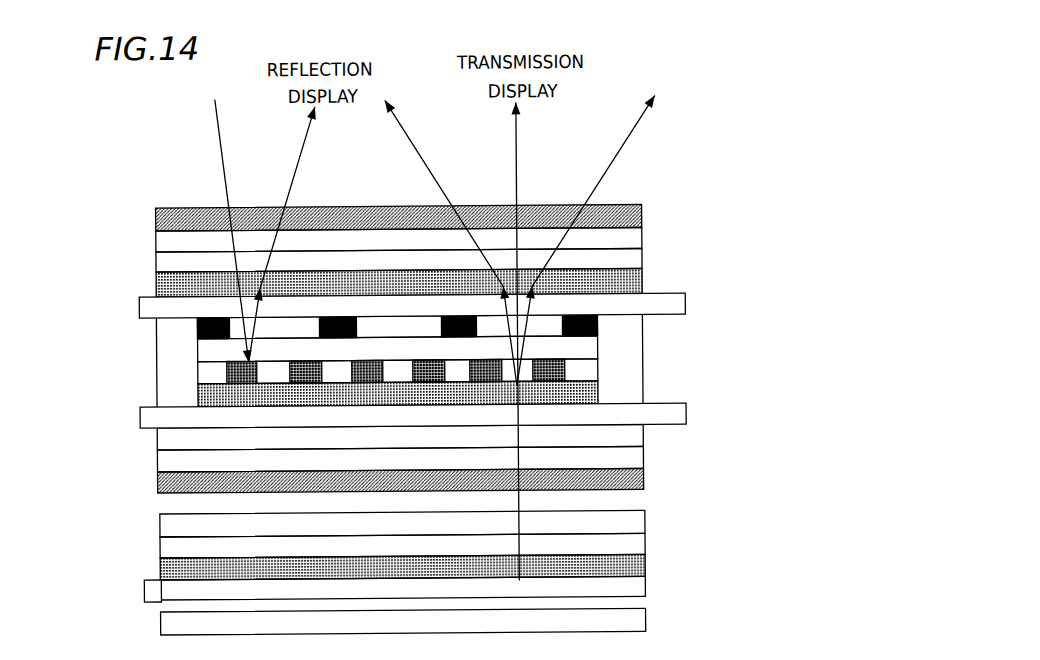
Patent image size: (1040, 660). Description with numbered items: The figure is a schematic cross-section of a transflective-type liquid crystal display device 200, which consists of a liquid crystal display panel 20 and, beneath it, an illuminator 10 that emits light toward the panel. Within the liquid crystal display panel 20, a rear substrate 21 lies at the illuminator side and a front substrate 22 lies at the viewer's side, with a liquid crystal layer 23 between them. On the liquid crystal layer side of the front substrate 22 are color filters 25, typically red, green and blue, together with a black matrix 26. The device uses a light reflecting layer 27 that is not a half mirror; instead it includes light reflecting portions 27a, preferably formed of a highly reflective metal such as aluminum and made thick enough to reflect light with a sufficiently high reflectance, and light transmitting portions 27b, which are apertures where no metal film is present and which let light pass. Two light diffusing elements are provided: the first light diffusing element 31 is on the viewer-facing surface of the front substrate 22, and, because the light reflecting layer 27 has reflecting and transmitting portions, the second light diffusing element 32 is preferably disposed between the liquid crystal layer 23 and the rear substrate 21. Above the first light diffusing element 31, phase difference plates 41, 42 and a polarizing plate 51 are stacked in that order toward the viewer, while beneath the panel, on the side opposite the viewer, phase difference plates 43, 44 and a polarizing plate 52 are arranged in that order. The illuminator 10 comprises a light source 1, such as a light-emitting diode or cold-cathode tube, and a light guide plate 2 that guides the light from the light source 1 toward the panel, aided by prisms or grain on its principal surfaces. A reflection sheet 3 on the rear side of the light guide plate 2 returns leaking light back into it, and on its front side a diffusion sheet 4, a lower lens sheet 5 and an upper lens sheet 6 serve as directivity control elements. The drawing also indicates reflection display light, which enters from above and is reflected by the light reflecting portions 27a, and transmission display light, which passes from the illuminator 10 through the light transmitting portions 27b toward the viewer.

The liquid crystal display device 200 is at (699, 145).
The liquid crystal display panel 20 is at (59, 208).
The illuminator 10 is at (91, 513).
The polarizing plate 51 is at (643, 212).
The phase difference plate 42 is at (637, 236).
The phase difference plate 41 is at (630, 260).
The first light diffusing element 31 is at (643, 278).
The front substrate 22 is at (686, 300).
The color filters 25 is at (240, 323).
The black matrix 26 is at (198, 330).
The liquid crystal layer 23 is at (598, 350).
The light reflecting layer 27 is at (97, 385).
The light reflecting portions 27a is at (227, 378).
The light transmitting portions 27b is at (275, 379).
The second light diffusing element 32 is at (598, 394).
The rear substrate 21 is at (687, 416).
The phase difference plate 43 is at (643, 440).
The phase difference plate 44 is at (643, 462).
The polarizing plate 52 is at (643, 484).
The upper lens sheet 6 is at (645, 520).
The lower lens sheet 5 is at (645, 544).
The diffusion sheet 4 is at (645, 564).
The light guide plate 2 is at (645, 588).
The light source 1 is at (148, 587).
The reflection sheet 3 is at (645, 618).